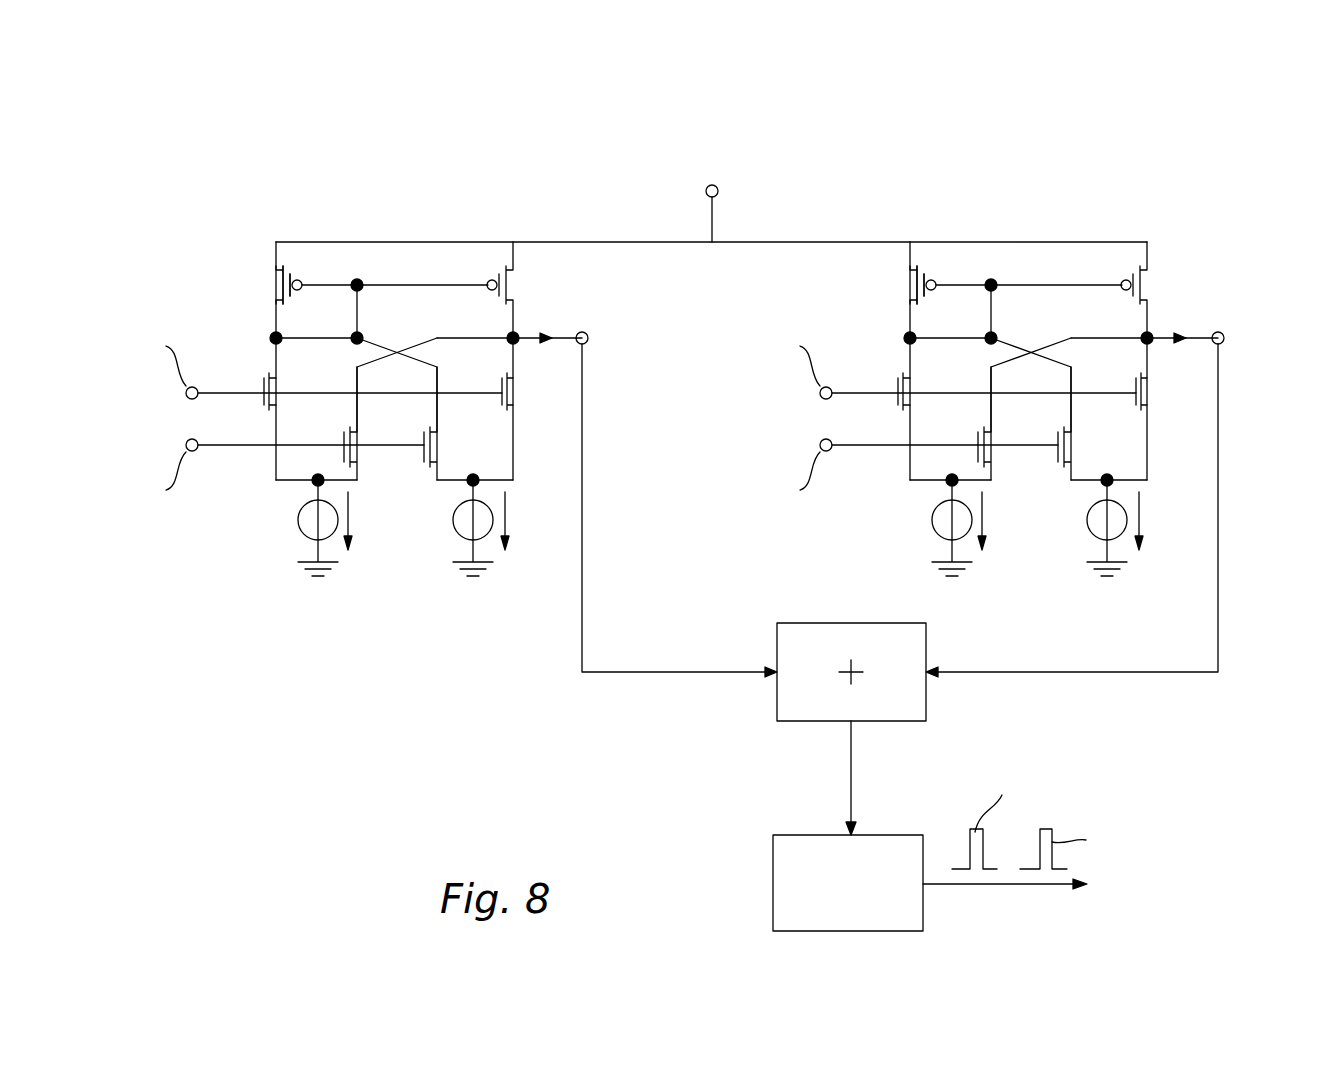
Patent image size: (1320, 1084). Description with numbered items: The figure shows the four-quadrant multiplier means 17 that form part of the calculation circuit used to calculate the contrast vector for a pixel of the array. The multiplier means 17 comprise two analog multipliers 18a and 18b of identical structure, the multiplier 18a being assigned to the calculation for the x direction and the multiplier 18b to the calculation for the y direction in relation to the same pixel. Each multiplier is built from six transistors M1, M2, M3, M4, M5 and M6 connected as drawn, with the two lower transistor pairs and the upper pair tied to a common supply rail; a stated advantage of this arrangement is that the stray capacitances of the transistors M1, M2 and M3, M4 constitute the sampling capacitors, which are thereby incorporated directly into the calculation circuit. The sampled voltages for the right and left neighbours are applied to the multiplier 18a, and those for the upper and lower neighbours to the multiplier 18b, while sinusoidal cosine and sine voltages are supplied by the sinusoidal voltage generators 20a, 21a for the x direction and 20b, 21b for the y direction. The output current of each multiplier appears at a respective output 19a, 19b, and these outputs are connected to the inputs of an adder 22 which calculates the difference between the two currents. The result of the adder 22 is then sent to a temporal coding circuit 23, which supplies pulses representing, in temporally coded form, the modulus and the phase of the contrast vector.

The four-quadrant multiplier means 17 is at (946, 155).
The analog multiplier 18a is at (402, 224).
The analog multiplier 18b is at (1010, 410).
The output 19a is at (588, 332).
The output 19b is at (1114, 485).
The sinusoidal voltage generator 20a is at (330, 540).
The sinusoidal voltage generator 21a is at (485, 540).
The sinusoidal voltage generator 20b is at (989, 547).
The sinusoidal voltage generator 21b is at (1144, 547).
The adder 22 is at (925, 700).
The temporal coding circuit 23 is at (873, 835).
The transistor M1 is at (256, 398).
The transistor M2 is at (352, 455).
The transistor M3 is at (516, 400).
The transistor M4 is at (424, 462).
The transistor M5 is at (272, 285).
The transistor M6 is at (518, 290).